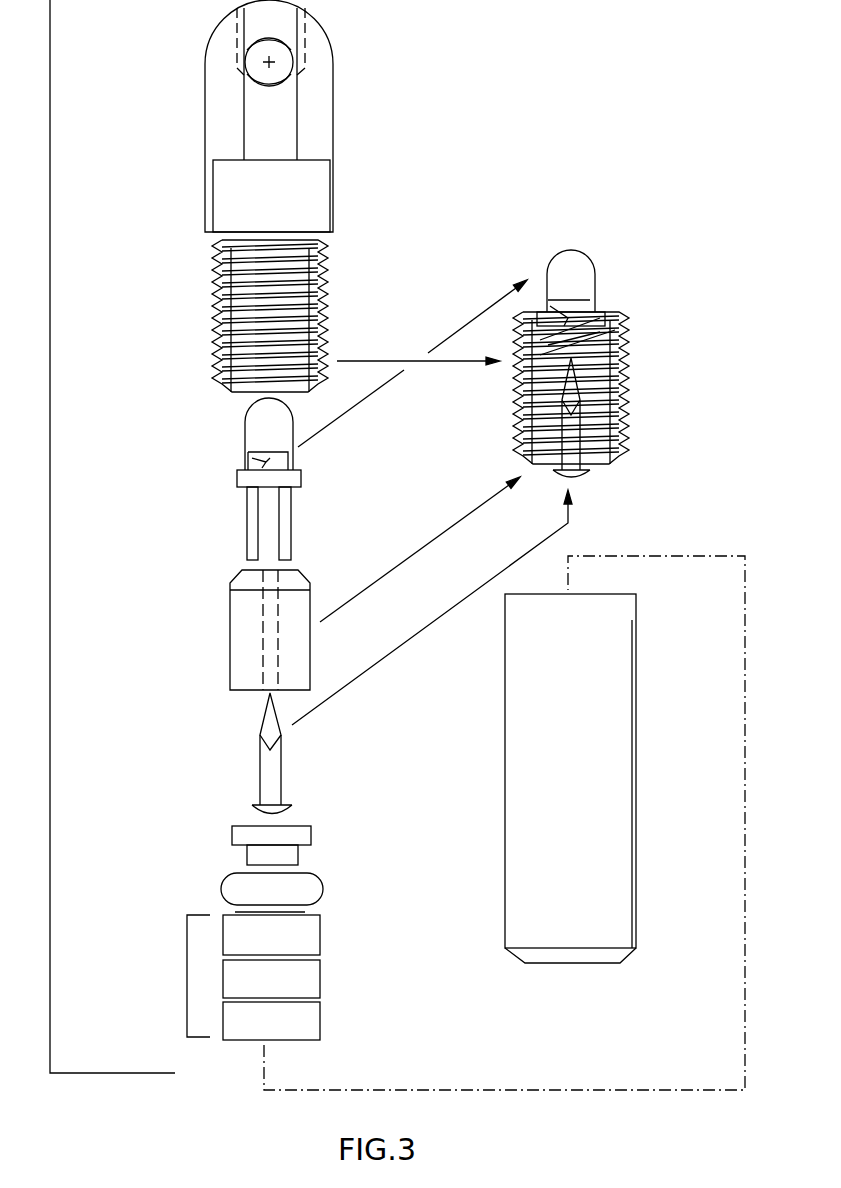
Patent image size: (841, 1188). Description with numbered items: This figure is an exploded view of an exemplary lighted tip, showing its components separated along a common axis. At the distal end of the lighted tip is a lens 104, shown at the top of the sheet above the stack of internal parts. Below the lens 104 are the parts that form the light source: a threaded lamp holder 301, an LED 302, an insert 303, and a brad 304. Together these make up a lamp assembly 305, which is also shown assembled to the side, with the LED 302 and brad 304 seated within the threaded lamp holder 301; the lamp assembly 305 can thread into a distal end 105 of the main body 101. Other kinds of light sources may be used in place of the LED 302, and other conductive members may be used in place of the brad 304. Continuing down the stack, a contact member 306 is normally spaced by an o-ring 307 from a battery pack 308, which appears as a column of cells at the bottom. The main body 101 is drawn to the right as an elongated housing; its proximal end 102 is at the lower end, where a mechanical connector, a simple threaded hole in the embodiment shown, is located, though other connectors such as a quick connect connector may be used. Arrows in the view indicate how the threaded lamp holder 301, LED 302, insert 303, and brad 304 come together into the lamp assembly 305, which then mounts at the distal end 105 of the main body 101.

The main body 101 is at (615, 728).
The proximal end 102 is at (522, 962).
The lens 104 is at (215, 82).
The distal end 105 is at (632, 596).
The threaded lamp holder 301 is at (216, 293).
The LED 302 is at (256, 438).
The insert 303 is at (240, 638).
The brad 304 is at (262, 775).
The lamp assembly 305 is at (622, 382).
The contact member 306 is at (233, 833).
The o-ring 307 is at (225, 885).
The battery pack 308 is at (187, 975).